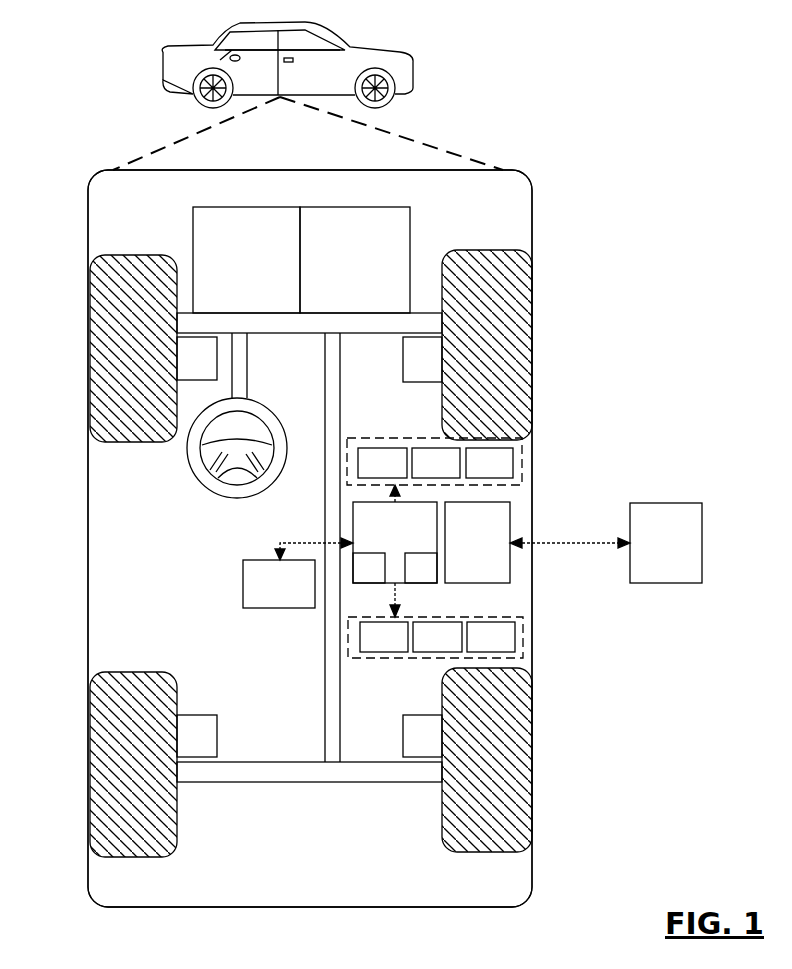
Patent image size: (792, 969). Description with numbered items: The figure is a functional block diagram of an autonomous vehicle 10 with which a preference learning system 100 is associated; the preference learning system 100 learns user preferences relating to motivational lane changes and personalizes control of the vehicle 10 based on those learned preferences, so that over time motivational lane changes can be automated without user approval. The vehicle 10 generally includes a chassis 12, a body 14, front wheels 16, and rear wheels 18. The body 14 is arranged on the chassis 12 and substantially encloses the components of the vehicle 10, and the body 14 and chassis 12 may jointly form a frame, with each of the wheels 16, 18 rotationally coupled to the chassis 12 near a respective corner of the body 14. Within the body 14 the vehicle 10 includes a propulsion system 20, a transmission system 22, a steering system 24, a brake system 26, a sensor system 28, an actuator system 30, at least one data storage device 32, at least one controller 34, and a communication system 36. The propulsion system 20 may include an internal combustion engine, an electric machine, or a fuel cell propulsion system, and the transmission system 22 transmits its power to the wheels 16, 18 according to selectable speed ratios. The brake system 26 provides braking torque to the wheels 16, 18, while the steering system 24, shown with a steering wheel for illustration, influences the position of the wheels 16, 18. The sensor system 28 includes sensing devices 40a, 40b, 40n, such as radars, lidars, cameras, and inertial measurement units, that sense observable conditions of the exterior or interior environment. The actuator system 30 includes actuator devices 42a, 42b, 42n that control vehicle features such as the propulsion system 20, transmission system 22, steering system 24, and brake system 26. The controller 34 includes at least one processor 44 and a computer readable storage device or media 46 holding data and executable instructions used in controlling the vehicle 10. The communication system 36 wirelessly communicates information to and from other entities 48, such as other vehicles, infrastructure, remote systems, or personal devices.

The vehicle 10 is at (162, 78).
The preference learning system 100 is at (552, 182).
The chassis 12 is at (322, 698).
The body 14 is at (87, 525).
The front wheels 16 is at (130, 255).
The rear wheels 18 is at (150, 857).
The propulsion system 20 is at (246, 260).
The transmission system 22 is at (355, 260).
The steering system 24 is at (266, 355).
The brake system 26 is at (309, 547).
The sensor system 28 is at (362, 440).
The actuator system 30 is at (397, 660).
The data storage device 32 is at (279, 584).
The controller 34 is at (395, 542).
The communication system 36 is at (477, 542).
The sensing device 40a is at (382, 463).
The sensing device 40b is at (436, 463).
The sensing device 40n is at (489, 463).
The actuator device 42a is at (384, 637).
The actuator device 42b is at (437, 637).
The actuator device 42n is at (491, 637).
The processor 44 is at (369, 568).
The computer readable storage device or media 46 is at (421, 568).
The other entities 48 is at (666, 543).